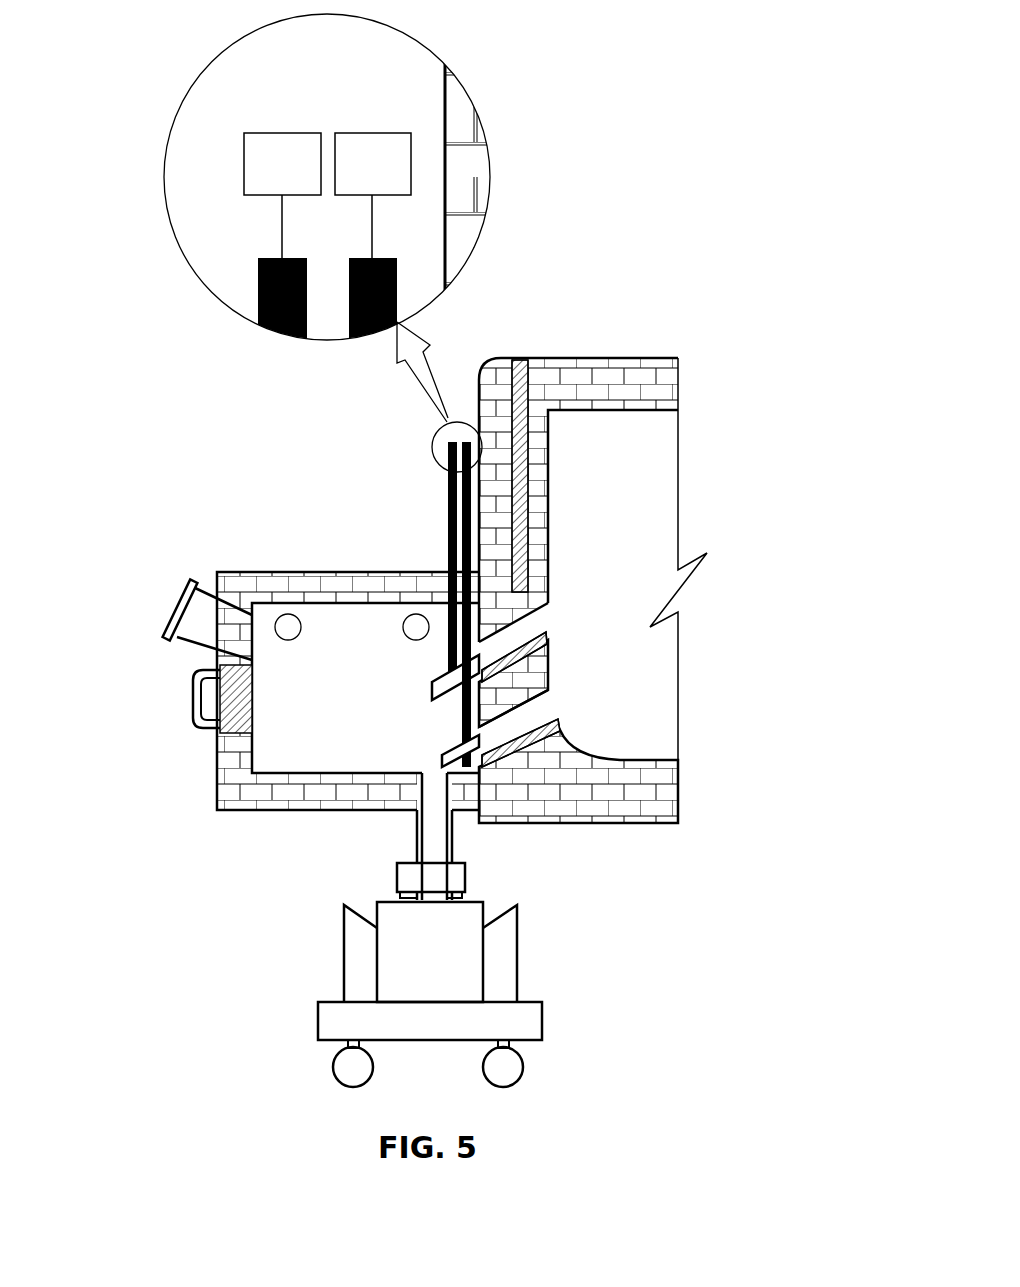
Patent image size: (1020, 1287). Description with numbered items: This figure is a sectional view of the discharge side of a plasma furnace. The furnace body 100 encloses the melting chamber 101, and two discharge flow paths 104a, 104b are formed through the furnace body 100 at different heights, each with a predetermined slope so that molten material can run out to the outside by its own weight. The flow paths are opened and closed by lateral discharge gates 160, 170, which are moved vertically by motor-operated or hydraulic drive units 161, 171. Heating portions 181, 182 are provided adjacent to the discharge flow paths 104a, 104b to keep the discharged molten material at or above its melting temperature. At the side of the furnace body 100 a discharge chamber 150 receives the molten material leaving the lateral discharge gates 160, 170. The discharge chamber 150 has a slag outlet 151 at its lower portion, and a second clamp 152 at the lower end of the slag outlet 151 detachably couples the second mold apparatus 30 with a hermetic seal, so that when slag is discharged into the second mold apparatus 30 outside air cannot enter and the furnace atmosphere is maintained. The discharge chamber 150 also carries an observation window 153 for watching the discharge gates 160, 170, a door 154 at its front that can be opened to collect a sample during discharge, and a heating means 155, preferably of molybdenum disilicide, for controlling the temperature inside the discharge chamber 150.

The furnace body 100 is at (478, 178).
The melting chamber 101 is at (640, 499).
The discharge flow path 104a is at (535, 632).
The discharge flow path 104b is at (545, 710).
The discharge chamber 150 is at (358, 578).
The slag outlet 151 is at (417, 830).
The second clamp 152 is at (397, 878).
The observation window 153 is at (190, 578).
The door 154 is at (193, 697).
The heating means 155 is at (288, 614).
The lateral discharge gate 160 is at (448, 656).
The drive unit 161 is at (284, 133).
The lateral discharge gate 170 is at (462, 717).
The drive unit 171 is at (372, 133).
The heating portion 181 is at (548, 652).
The heating portion 182 is at (528, 757).
The second mold apparatus 30 is at (388, 945).